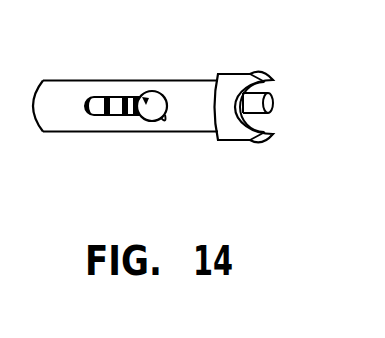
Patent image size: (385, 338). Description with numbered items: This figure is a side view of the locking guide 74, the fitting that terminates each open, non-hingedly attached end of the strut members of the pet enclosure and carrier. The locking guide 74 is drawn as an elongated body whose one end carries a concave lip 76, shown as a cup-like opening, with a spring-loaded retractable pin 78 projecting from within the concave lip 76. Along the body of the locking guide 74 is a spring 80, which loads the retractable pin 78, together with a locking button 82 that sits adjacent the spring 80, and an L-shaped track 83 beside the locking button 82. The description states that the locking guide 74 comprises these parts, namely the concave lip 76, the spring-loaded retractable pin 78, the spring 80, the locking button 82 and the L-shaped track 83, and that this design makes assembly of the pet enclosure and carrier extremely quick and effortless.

The locking guide 74 is at (197, 82).
The concave lip 76 is at (247, 72).
The spring-loaded retractable pin 78 is at (277, 103).
The spring 80 is at (103, 114).
The locking button 82 is at (148, 116).
The L-shaped track 83 is at (167, 118).